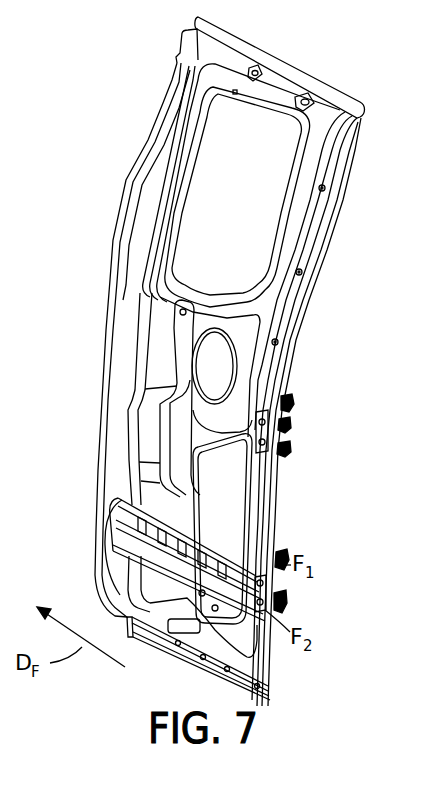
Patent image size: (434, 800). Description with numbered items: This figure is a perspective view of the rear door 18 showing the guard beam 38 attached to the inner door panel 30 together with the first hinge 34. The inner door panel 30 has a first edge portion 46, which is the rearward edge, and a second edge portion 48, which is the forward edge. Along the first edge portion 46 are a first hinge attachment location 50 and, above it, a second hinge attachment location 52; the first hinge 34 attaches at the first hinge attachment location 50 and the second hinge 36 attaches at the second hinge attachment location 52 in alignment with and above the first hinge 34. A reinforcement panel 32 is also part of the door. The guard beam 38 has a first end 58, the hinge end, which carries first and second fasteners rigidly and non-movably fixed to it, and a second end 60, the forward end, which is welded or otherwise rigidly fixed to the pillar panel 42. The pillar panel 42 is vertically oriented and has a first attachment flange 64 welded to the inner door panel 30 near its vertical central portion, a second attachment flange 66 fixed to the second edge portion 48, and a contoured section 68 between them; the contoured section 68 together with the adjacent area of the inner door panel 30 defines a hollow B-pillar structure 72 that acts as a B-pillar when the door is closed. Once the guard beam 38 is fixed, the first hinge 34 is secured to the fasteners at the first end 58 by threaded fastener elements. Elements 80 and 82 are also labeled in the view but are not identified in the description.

The rear door 18 is at (327, 83).
The hollow B-pillar structure 72 is at (166, 107).
The second attachment flange 66 is at (152, 148).
The second edge portion 48 is at (137, 181).
The contoured section 68 is at (141, 233).
The weld point 80 is at (235, 95).
The inner door panel 30 is at (352, 152).
The first edge portion 46 is at (329, 245).
The first attachment flange 64 is at (186, 337).
The pillar panel 42 is at (120, 411).
The second hinge attachment location 52 is at (274, 433).
The second hinge 36 is at (290, 447).
The reinforcement panel 32 is at (265, 495).
The second end 60 is at (120, 518).
The guard beam 38 is at (118, 548).
The first hinge 34 is at (283, 560).
The first end 58 is at (263, 590).
The first hinge attachment location 50 is at (285, 605).
The door sill 82 is at (221, 681).